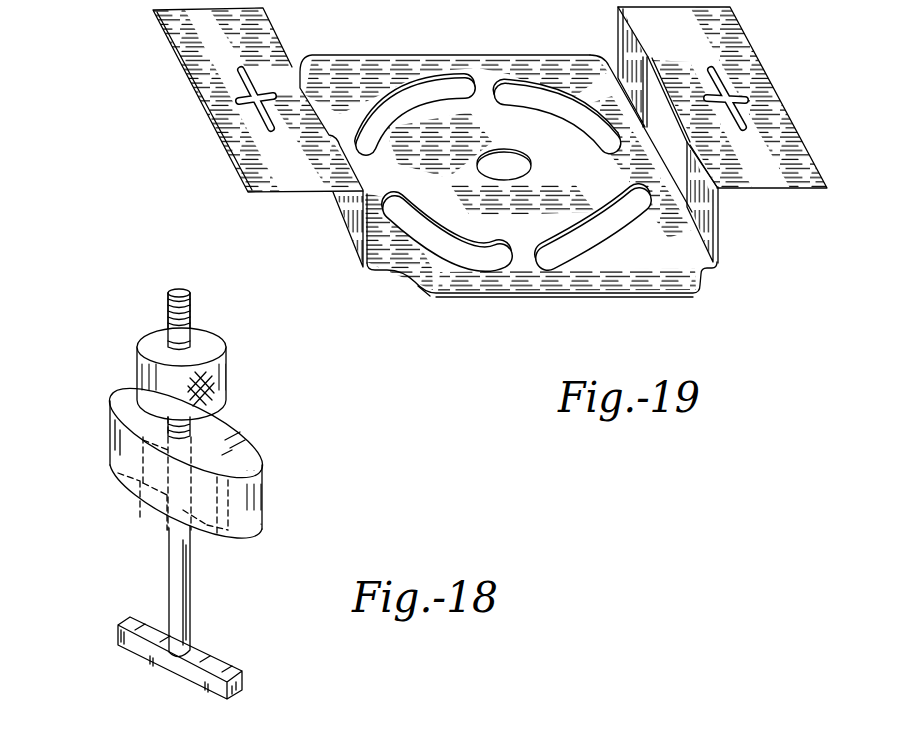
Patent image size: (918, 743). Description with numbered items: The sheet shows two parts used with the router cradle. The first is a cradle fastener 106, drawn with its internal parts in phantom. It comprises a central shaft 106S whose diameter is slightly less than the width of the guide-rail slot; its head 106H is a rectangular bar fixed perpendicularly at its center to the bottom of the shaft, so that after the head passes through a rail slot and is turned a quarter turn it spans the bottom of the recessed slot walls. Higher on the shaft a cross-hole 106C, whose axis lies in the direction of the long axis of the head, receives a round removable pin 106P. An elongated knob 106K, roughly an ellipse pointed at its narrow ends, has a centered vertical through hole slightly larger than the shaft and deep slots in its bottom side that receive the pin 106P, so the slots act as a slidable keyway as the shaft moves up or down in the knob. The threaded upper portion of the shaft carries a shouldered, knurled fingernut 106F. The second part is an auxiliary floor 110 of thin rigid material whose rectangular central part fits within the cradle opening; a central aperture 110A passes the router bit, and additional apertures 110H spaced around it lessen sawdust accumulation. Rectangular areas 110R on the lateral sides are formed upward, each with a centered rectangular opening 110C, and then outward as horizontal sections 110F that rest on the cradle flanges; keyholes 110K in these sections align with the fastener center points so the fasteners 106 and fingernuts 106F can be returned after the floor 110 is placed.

In FIG. 19, the auxiliary floor 110 is at (340, 68).
In FIG. 19, the horizontally formed section 110F is at (193, 44).
In FIG. 19, the keyhole 110K is at (236, 77).
In FIG. 19, the additional aperture 110H is at (464, 80).
In FIG. 19, the central aperture 110A is at (519, 173).
In FIG. 19, the rectangular area 110R is at (353, 215).
In FIG. 19, the rectangular opening 110C is at (678, 148).
In FIG. 18, the cradle fastener 106 is at (110, 408).
In FIG. 18, the knurled fingernut 106F is at (140, 362).
In FIG. 18, the elongated knob 106K is at (125, 436).
In FIG. 18, the cross-hole 106C is at (120, 474).
In FIG. 18, the pin 106P is at (155, 503).
In FIG. 18, the shaft 106S is at (173, 555).
In FIG. 18, the head 106H is at (147, 626).